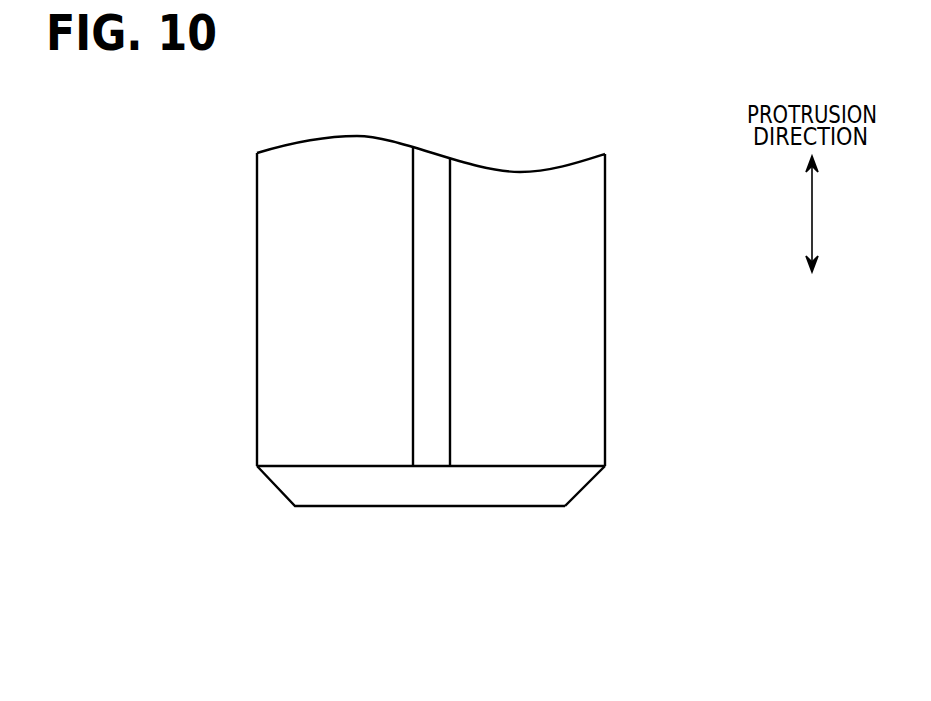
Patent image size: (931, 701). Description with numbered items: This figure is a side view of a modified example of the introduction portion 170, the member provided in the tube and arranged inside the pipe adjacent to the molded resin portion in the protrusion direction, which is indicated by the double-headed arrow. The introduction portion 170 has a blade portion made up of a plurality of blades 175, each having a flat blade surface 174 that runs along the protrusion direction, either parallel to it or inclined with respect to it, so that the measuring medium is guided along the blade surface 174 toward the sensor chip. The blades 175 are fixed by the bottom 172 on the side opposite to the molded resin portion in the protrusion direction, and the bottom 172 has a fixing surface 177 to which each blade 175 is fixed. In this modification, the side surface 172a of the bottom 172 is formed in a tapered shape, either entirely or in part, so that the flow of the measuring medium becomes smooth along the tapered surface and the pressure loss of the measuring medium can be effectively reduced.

The introduction portion 170 is at (449, 363).
The bottom 172 is at (495, 528).
The side surface 172a is at (587, 487).
The blade surface 174 is at (572, 436).
The blade 175 is at (257, 291).
The fixing surface 177 is at (295, 463).